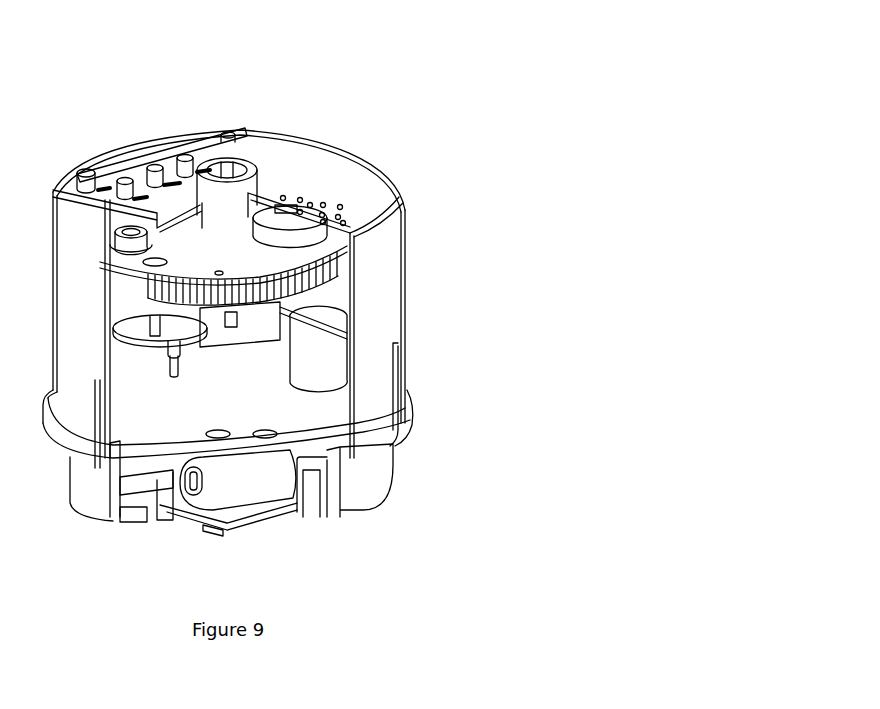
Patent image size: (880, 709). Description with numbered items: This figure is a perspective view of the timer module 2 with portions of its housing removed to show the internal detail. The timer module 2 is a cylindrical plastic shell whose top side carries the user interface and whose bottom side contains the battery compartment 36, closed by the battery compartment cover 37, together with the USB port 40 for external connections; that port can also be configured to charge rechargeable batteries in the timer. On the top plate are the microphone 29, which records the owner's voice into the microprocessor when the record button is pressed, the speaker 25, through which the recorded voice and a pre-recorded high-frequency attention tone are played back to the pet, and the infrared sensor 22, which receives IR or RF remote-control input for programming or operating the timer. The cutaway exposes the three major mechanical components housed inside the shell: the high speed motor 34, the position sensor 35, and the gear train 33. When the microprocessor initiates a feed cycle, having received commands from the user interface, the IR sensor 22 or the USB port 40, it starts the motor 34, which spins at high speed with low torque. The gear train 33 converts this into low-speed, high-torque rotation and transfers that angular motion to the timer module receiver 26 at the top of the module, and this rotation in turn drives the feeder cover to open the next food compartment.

The timer module 2 is at (378, 332).
The infrared (IR) sensor 22 is at (345, 160).
The speaker 25 is at (318, 236).
The timer module receiver 26 is at (267, 157).
The microphone 29 is at (153, 243).
The gear train 33 is at (310, 295).
The high speed motor 34 is at (318, 368).
The position sensor 35 is at (152, 342).
The battery compartment 36 is at (244, 486).
The battery compartment cover 37 is at (128, 495).
The USB port 40 is at (232, 528).